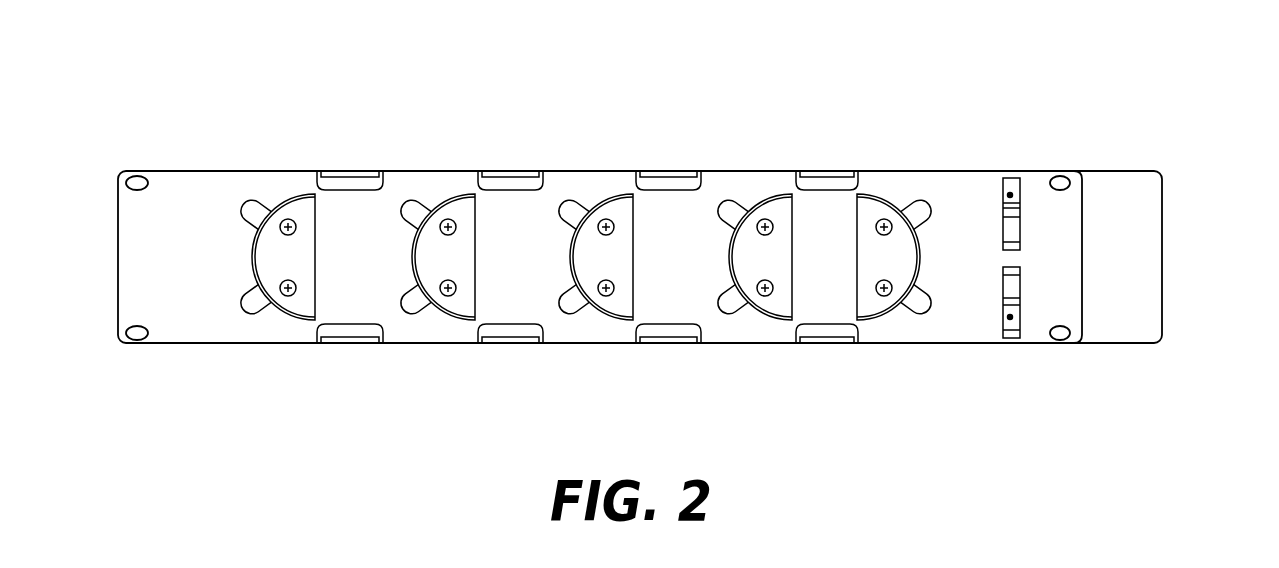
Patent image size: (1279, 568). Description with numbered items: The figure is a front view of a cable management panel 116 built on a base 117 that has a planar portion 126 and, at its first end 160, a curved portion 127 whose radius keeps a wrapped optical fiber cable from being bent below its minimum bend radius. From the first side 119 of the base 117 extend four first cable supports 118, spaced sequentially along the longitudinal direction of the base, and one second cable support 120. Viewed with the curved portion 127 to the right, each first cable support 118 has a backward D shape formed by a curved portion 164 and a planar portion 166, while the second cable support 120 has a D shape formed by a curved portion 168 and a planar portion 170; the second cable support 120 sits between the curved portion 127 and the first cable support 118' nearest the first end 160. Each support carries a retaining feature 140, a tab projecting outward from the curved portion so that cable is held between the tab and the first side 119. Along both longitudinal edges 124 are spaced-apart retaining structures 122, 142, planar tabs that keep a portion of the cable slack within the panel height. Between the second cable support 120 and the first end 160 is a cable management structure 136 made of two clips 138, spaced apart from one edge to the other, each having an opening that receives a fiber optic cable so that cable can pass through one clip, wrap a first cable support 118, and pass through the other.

The cable management panel 116 is at (649, 250).
The base 117 is at (118, 262).
The first cable support 118 is at (551, 262).
The first cable support nearest the first end 118' is at (789, 313).
The first side of the base 119 is at (180, 215).
The second cable support 120 is at (887, 194).
The retaining structure 122 is at (333, 172).
The longitudinal edge 124 is at (720, 171).
The planar portion 126 is at (198, 326).
The curved portion 127 is at (1140, 263).
The cable management structure 136 is at (1038, 293).
The clip 138 is at (1010, 195).
The retaining feature 140 is at (566, 200).
The retaining structure 142 is at (357, 179).
The first end 160 is at (1090, 152).
The curved portion of first cable support 164 is at (287, 325).
The planar portion of first cable support 166 is at (317, 258).
The curved portion of second cable support 168 is at (887, 318).
The planar portion of second cable support 170 is at (857, 274).